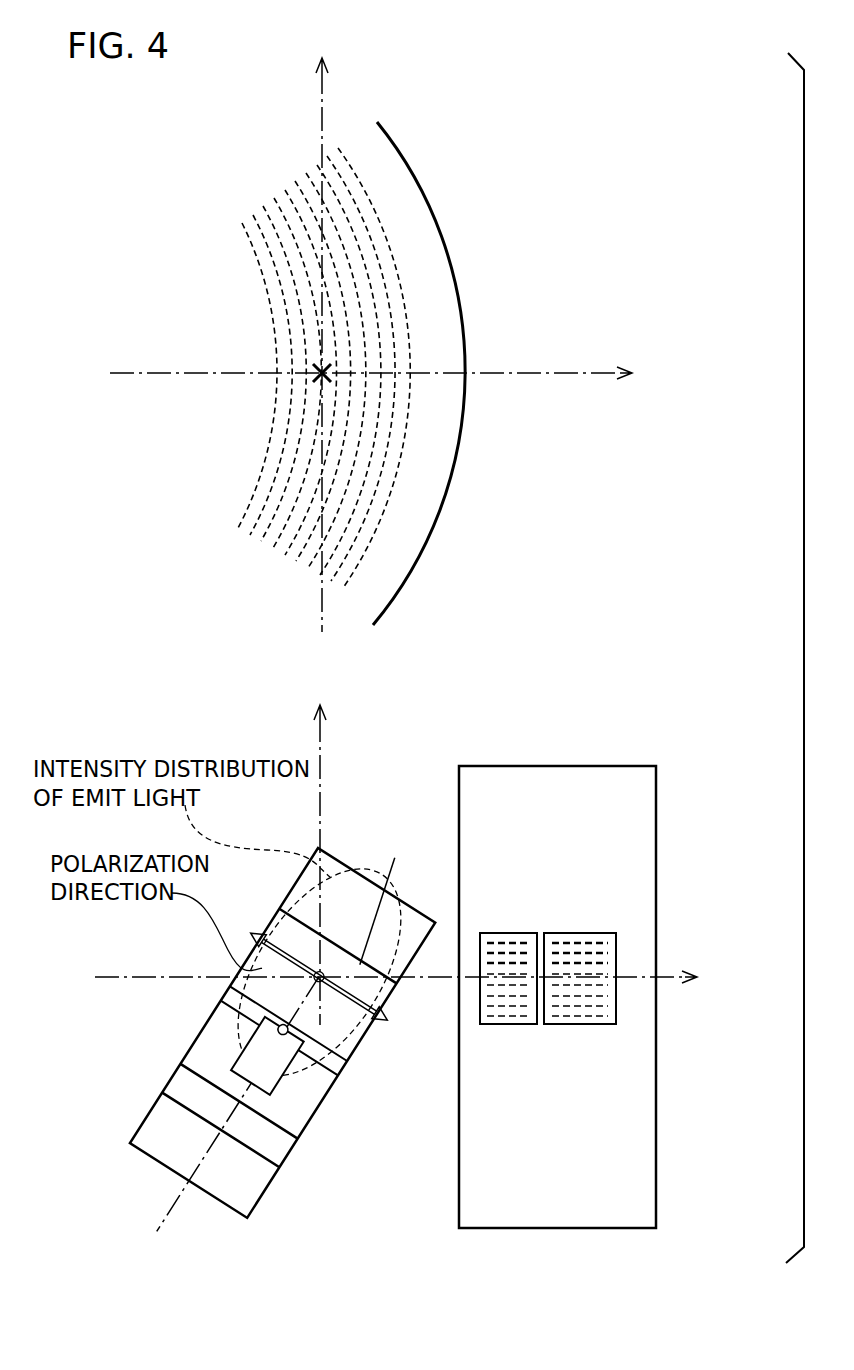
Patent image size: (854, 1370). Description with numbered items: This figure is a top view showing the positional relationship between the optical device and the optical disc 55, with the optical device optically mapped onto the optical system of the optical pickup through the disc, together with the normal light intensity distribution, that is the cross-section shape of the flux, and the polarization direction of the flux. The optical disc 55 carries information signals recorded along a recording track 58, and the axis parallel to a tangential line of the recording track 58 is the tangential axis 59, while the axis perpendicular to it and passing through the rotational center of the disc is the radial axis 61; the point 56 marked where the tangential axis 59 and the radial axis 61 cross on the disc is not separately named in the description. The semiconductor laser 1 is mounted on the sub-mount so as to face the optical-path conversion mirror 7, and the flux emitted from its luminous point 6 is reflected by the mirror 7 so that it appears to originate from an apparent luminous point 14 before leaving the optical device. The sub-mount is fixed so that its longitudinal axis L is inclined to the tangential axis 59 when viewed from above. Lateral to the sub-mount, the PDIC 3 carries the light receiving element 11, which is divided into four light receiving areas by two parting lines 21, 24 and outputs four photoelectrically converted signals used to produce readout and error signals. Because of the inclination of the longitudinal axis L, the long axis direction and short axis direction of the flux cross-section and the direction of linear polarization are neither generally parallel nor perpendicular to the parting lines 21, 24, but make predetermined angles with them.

The semiconductor laser 1 is at (258, 1050).
The PDIC 3 is at (545, 766).
The luminous point 6 is at (287, 1036).
The optical-path conversion mirror 7 is at (360, 965).
The light receiving element 11 is at (578, 930).
The apparent luminous point 14 is at (280, 932).
The parting line 21 is at (512, 980).
The parting line 24 is at (537, 950).
The optical disc 55 is at (412, 218).
The focal point 56 is at (333, 368).
The recording track 58 is at (345, 230).
The tangential axis 59 is at (322, 94).
The radial axis 61 is at (510, 374).
The longitudinal axis L is at (178, 1200).